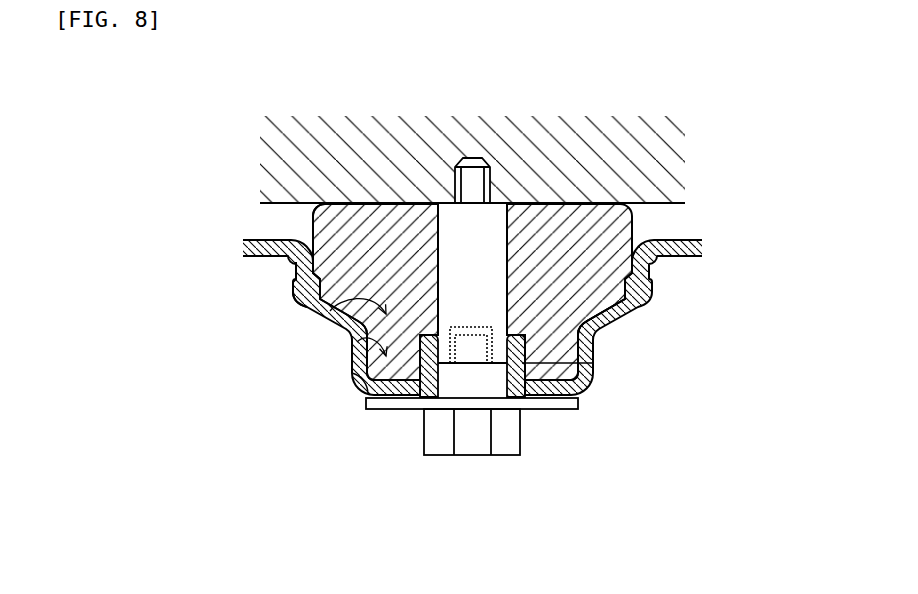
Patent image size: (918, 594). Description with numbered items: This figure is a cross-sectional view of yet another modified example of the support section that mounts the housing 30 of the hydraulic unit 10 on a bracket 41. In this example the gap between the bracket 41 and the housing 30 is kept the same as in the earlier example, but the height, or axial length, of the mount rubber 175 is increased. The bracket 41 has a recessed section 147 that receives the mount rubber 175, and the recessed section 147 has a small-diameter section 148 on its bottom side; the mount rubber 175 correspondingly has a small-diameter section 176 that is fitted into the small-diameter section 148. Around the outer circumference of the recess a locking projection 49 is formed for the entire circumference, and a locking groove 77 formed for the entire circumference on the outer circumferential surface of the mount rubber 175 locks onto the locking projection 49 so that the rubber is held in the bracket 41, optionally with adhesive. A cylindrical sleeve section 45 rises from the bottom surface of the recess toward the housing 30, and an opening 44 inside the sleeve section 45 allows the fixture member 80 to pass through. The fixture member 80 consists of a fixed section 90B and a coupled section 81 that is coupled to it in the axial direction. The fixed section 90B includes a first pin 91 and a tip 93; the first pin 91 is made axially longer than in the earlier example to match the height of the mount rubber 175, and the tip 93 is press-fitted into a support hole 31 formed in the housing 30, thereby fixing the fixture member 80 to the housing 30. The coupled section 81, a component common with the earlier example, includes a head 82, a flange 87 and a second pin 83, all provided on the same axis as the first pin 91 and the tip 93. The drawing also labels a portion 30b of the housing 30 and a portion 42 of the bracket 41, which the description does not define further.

The hydraulic unit 10 is at (672, 176).
The housing 30 is at (513, 159).
The lower surface of floor panel 30b is at (634, 205).
The support hole 31 is at (466, 185).
The tip 93 is at (481, 184).
The mount rubber 175 is at (316, 218).
The locking groove 77 is at (297, 272).
The locking projection 49 is at (295, 297).
The recessed section 147 is at (330, 311).
The small-diameter section 148 is at (357, 342).
The bracket 41 is at (693, 258).
The through hole 42 is at (361, 421).
The fixed section 90B is at (513, 248).
The first pin 91 is at (597, 338).
The small-diameter section 176 is at (593, 363).
The flange 87 is at (572, 404).
The sleeve section 45 is at (543, 382).
The fixture member 80 is at (528, 435).
The coupled section 81 is at (412, 432).
The head 82 is at (437, 450).
The second pin 83 is at (472, 382).
The opening 44 is at (493, 365).